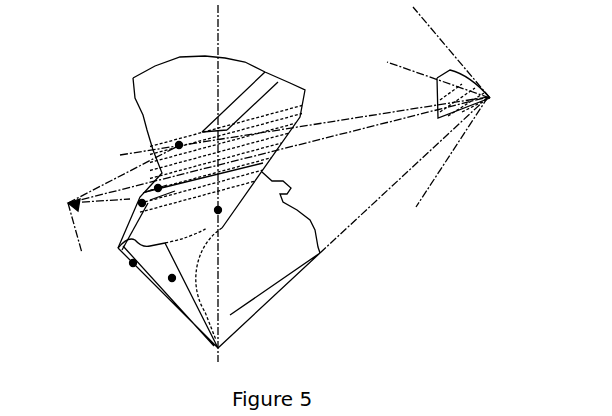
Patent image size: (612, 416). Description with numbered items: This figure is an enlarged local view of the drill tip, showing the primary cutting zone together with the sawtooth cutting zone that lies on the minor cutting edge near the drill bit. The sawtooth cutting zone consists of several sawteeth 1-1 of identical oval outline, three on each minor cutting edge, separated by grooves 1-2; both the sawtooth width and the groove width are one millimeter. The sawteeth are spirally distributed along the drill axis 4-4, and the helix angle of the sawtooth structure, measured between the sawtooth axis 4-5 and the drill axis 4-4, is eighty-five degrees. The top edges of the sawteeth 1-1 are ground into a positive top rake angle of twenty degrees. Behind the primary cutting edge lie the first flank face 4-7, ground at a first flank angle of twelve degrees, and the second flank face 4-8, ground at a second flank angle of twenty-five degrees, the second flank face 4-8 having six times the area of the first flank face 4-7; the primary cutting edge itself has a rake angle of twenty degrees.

The axis of the sawtooth 4-5 is at (179, 145).
The sawteeth 1-1 is at (158, 188).
The grooves 1-2 is at (142, 203).
The first flank face 4-7 is at (133, 263).
The second flank face 4-8 is at (172, 278).
The drill axis 4-4 is at (218, 210).